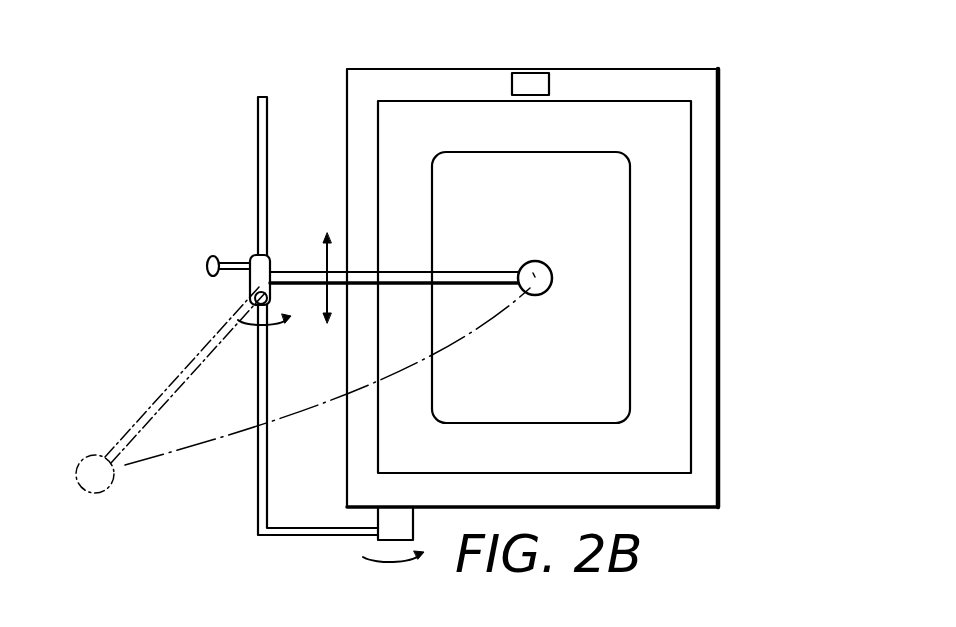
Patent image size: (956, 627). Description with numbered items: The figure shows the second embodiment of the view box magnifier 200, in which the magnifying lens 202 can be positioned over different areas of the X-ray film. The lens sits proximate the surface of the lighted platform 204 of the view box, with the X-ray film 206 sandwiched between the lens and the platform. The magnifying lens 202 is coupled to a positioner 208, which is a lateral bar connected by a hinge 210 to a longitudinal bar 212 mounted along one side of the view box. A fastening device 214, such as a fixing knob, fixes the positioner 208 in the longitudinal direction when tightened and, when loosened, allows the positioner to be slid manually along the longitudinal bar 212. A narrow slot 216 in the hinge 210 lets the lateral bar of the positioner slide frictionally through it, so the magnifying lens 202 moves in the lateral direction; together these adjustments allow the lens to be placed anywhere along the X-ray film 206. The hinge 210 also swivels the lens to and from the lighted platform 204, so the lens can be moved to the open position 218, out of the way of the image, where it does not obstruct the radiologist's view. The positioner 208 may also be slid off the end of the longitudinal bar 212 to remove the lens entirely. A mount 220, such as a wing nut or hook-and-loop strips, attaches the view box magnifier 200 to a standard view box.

The view box magnifier 200 is at (572, 254).
The magnifying lens 202 is at (547, 280).
The lighted platform 204 is at (677, 123).
The X-ray film 206 is at (613, 223).
The positioner 208 is at (407, 287).
The hinge 210 is at (283, 359).
The longitudinal bar 212 is at (258, 475).
The fastening device 214 is at (207, 265).
The narrow slot 216 is at (265, 252).
The open position 218 is at (118, 423).
The mount 220 is at (390, 518).